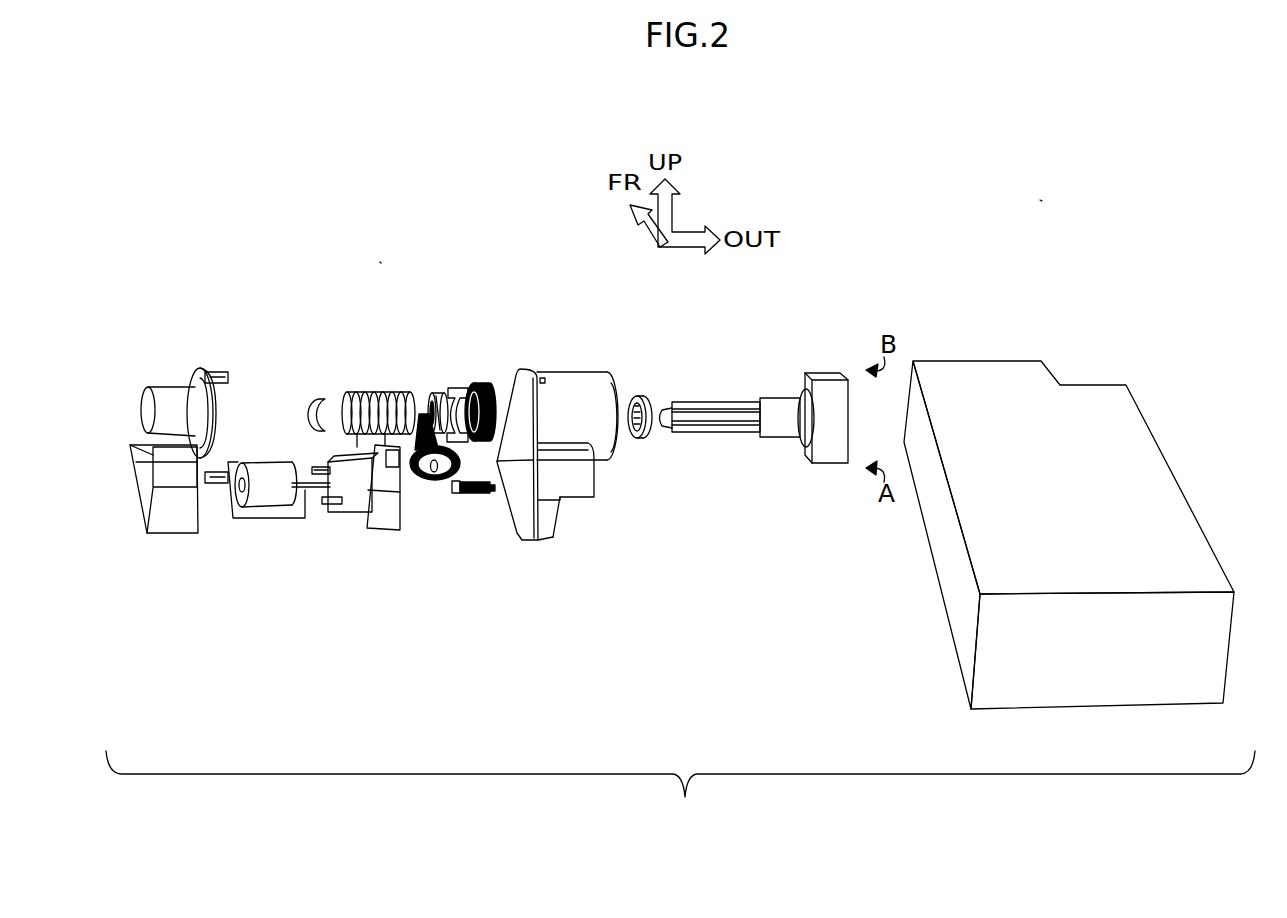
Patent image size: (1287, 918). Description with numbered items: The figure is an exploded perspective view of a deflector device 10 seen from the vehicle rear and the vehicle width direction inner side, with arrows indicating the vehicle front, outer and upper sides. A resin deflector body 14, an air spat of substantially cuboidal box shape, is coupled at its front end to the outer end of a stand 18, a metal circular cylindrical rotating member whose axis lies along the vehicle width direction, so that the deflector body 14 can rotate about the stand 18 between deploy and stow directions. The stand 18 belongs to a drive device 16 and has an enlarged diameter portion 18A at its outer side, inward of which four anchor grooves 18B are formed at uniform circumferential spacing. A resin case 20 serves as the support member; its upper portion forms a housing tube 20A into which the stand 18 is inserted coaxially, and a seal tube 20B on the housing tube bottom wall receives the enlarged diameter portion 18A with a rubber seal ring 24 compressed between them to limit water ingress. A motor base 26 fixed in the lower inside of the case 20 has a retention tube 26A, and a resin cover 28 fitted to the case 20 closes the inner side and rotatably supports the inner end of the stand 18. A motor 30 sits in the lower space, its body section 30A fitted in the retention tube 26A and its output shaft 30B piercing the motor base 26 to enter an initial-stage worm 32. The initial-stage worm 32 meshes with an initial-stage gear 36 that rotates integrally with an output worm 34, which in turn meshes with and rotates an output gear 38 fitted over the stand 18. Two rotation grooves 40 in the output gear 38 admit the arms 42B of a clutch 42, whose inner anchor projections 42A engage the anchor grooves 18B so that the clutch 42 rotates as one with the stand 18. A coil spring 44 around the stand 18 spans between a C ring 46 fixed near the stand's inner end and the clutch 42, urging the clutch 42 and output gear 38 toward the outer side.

The deflector device 10 is at (1036, 249).
The deflector body 14 is at (1162, 453).
The drive device 16 is at (396, 296).
The stand 18 is at (725, 403).
The enlarged diameter portion 18A is at (782, 408).
The anchor grooves 18B is at (722, 423).
The case 20 is at (557, 372).
The housing tube 20A is at (603, 372).
The seal tube 20B is at (618, 388).
The seal ring 24 is at (638, 443).
The motor base 26 is at (378, 528).
The retention tube 26A is at (343, 512).
The cover 28 is at (158, 385).
The motor 30 is at (267, 470).
The body section 30A is at (263, 512).
The output shaft 30B is at (312, 490).
The initial-stage worm 32 is at (468, 495).
The output worm 34 is at (425, 413).
The initial-stage gear 36 is at (420, 487).
The output gear 38 is at (490, 390).
The rotation grooves 40 is at (467, 397).
The clutch 42 is at (443, 407).
The anchor projections 42A is at (425, 405).
The arms 42B is at (432, 405).
The coil spring 44 is at (353, 392).
The C ring 46 is at (310, 402).